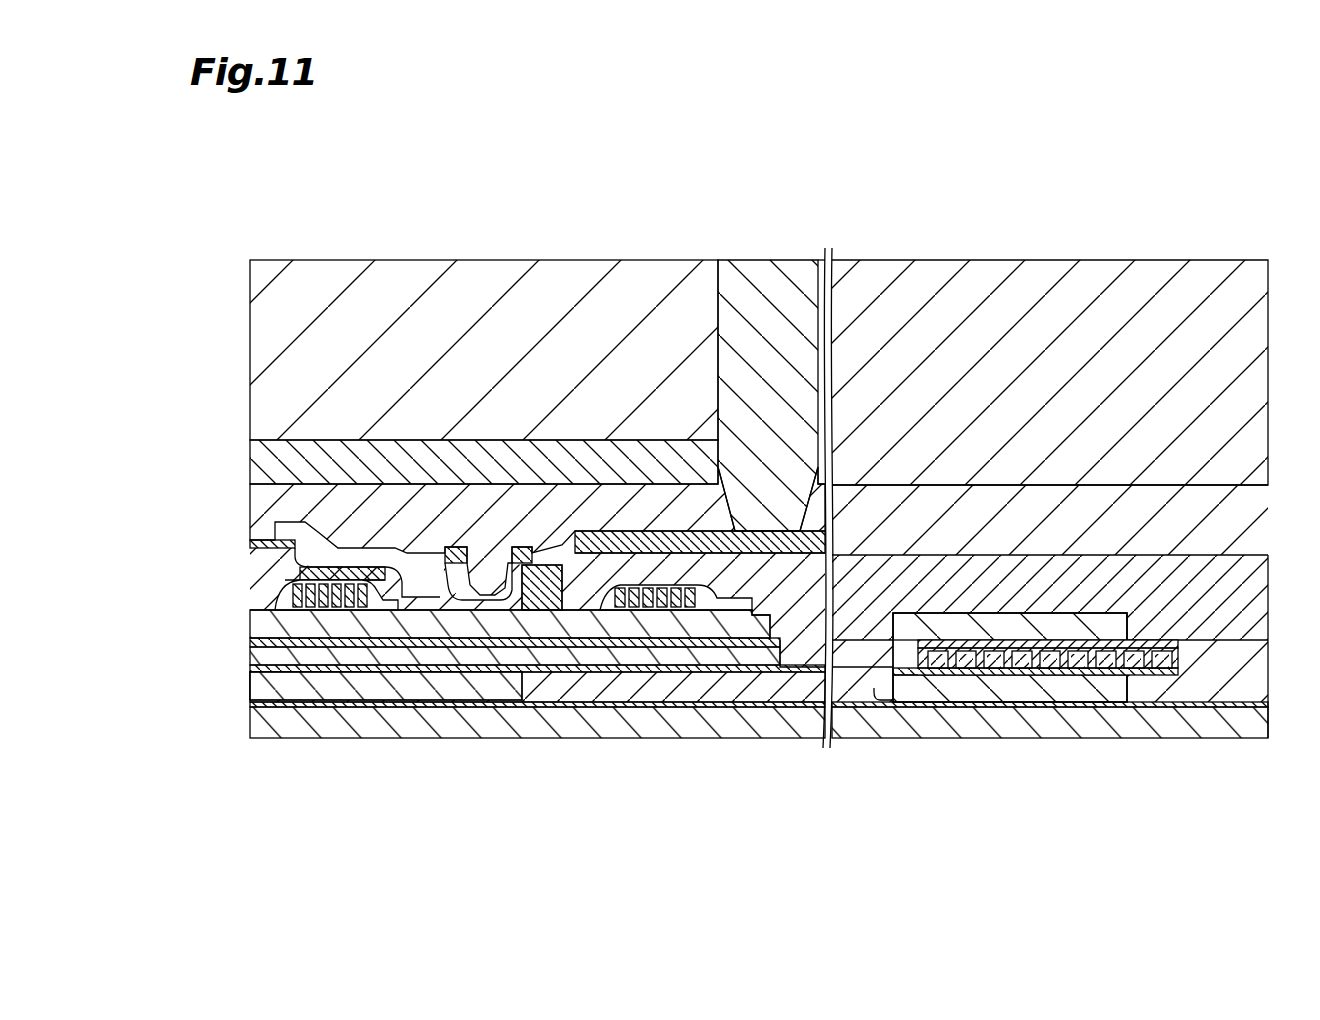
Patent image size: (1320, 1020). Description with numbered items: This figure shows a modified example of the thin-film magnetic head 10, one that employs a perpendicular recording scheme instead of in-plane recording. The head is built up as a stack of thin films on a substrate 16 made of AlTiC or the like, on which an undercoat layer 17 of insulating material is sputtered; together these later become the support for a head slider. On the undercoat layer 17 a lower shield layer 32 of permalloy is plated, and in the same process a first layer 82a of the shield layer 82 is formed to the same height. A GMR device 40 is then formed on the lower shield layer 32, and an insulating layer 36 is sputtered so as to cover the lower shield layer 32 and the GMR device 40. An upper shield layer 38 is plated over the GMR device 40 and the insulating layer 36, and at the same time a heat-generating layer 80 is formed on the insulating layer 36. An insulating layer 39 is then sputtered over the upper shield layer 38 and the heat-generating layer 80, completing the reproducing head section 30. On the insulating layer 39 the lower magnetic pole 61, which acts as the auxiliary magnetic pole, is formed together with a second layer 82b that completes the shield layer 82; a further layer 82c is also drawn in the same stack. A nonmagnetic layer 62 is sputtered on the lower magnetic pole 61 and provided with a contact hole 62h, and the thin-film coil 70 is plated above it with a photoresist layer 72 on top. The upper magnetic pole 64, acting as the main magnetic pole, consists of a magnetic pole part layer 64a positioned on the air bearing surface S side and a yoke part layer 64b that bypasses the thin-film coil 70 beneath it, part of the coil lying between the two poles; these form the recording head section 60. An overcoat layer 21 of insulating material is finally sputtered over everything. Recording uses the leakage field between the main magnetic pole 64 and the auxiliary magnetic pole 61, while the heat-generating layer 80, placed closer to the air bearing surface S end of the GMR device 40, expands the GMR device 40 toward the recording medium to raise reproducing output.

The thin-film magnetic head 10 is at (250, 212).
The overcoat layer 21 is at (250, 365).
The contact hole 62h is at (452, 598).
The upper magnetic pole 64 is at (465, 527).
The yoke part layer 64b is at (268, 537).
The magnetic pole part layer 64a is at (296, 556).
The photoresist layer 72 is at (288, 578).
The thin-film coil 70 is at (285, 603).
The air bearing surface S is at (246, 594).
The nonmagnetic layer 62 is at (250, 612).
The lower magnetic pole 61 is at (250, 644).
The insulating layer 39 is at (250, 657).
The upper shield layer 38 is at (148, 662).
The insulating layer 36 is at (250, 672).
The reproducing head section 30 is at (143, 668).
The GMR device 40 is at (250, 686).
The lower shield layer 32 is at (148, 716).
The undercoat layer 17 is at (250, 705).
The substrate 16 is at (250, 722).
The recording head section 60 is at (103, 448).
The heat-generating layer 80 is at (1178, 658).
The shield layer 82 is at (980, 751).
The first layer 82a is at (895, 678).
The second layer 82b is at (870, 650).
The second terminal layer 82c is at (882, 660).